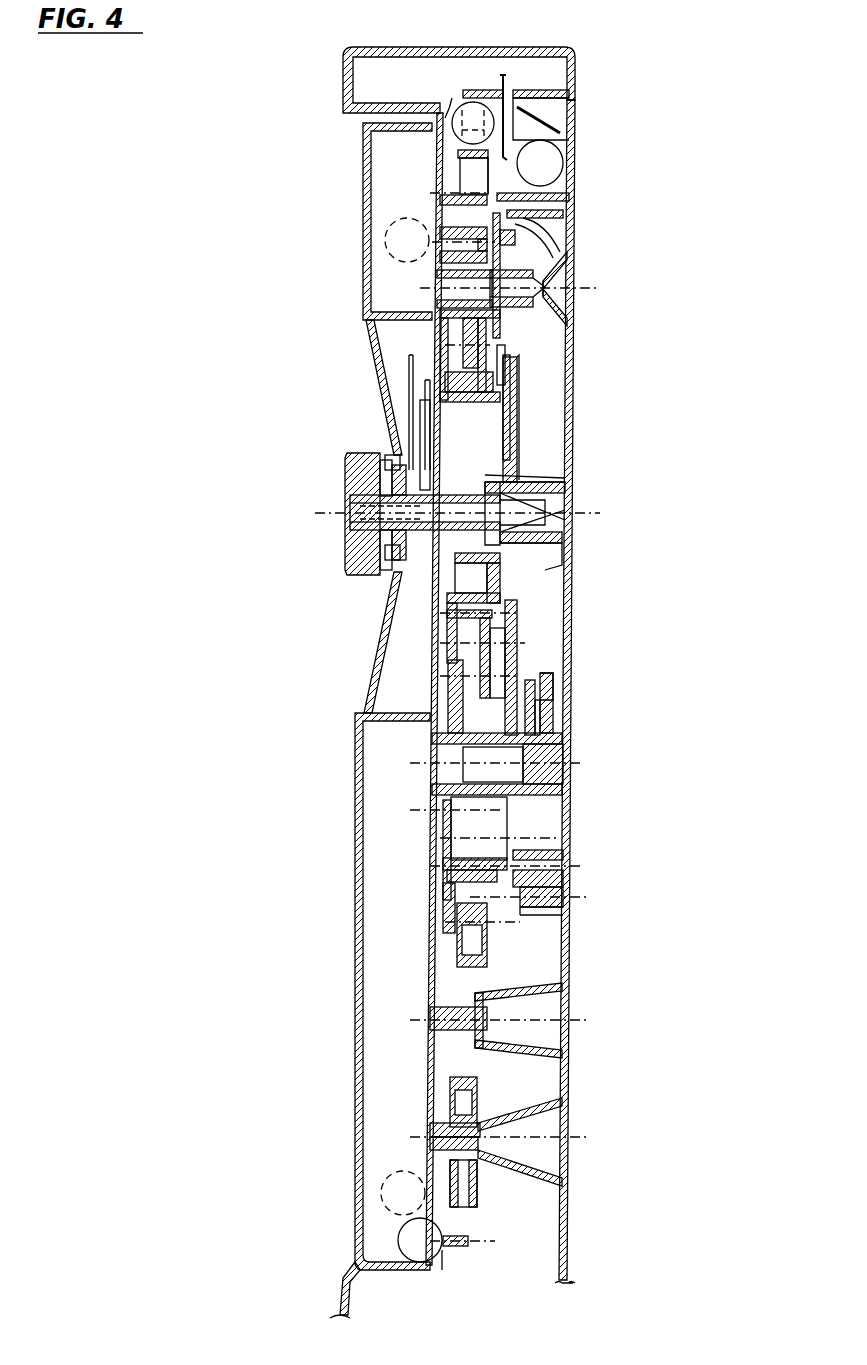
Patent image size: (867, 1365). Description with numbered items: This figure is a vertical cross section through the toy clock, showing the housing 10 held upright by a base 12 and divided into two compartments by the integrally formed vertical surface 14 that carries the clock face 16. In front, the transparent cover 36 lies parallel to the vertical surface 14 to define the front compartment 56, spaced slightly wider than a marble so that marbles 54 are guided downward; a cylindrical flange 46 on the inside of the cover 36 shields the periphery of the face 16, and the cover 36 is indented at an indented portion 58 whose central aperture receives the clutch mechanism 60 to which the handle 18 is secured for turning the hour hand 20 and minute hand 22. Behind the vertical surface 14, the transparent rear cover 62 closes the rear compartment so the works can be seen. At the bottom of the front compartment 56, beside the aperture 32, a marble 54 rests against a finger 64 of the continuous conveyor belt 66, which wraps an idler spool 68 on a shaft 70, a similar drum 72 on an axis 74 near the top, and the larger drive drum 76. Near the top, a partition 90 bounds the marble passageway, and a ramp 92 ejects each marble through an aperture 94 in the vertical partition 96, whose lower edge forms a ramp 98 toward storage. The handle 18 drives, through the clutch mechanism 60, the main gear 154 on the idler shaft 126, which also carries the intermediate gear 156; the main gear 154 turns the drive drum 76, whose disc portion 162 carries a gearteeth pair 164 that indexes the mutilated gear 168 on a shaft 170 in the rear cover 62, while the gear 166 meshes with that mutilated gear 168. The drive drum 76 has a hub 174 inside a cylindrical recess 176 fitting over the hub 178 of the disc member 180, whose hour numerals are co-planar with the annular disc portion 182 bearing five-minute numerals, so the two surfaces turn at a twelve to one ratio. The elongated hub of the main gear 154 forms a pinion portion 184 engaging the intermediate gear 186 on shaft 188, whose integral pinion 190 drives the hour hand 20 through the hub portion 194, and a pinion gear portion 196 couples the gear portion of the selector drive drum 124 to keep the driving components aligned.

The housing 10 is at (500, 47).
The base 12 is at (345, 1270).
The vertical surface 14 is at (433, 940).
The face 16 is at (465, 648).
The handle 18 is at (345, 470).
The hour hand 20 is at (430, 410).
The minute hand 22 is at (410, 400).
The aperture 32 is at (468, 1240).
The cover 36 is at (355, 797).
The cylindrical flange 46 is at (405, 300).
The marbles 54 is at (465, 103).
The front compartment 56 is at (378, 165).
The indented portion 58 is at (395, 590).
The clutch mechanism 60 is at (395, 455).
The rear cover 62 is at (510, 420).
The fingers 64 is at (448, 1255).
The conveyor belt 66 is at (490, 1210).
The idler spool 68 is at (510, 1100).
The shaft 70 is at (440, 1130).
The drum 72 is at (470, 150).
The axis 74 is at (445, 195).
The drive drum 76 is at (505, 585).
The partition 90 is at (490, 95).
The ramp 92 is at (450, 118).
The aperture 94 is at (520, 115).
The vertical partition 96 is at (505, 85).
The ramp 98 is at (560, 210).
The drive drum 124 is at (560, 262).
The idler shaft 126 is at (545, 540).
The main gear 154 is at (530, 478).
The intermediate gear 156 is at (505, 565).
The disc portion 162 is at (560, 852).
The gearteeth pair 164 is at (505, 680).
The gear 166 is at (555, 700).
The mutilated gear 168 is at (530, 905).
The shaft 170 is at (540, 872).
The hub 174 is at (555, 735).
The cylindrical recess 176 is at (500, 625).
The hub 178 is at (450, 762).
The disc member 180 is at (455, 680).
The annular disc portion 182 is at (450, 895).
The pinion portion 184 is at (510, 520).
The intermediate gear 186 is at (515, 395).
The shaft 188 is at (520, 375).
The pinion 190 is at (440, 340).
The hub portion 194 is at (540, 270).
The pinion gear portion 196 is at (495, 345).